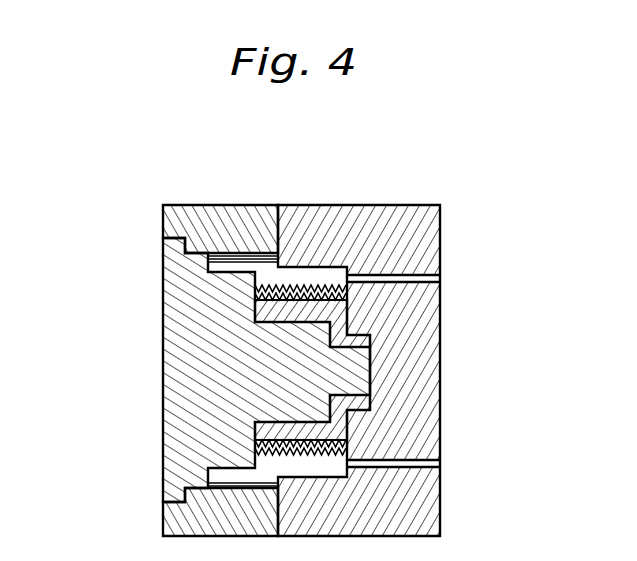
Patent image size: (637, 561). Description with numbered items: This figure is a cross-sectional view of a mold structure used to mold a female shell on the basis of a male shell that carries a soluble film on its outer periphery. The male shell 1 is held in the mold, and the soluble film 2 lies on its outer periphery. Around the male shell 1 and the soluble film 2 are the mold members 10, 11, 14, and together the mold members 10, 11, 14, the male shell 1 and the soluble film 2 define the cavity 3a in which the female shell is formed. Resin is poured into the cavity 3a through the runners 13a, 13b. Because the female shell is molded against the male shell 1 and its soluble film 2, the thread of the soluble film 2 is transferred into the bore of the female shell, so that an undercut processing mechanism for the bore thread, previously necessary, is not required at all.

The male shell 1 is at (345, 327).
The soluble film 2 is at (325, 288).
The cavity 3a is at (247, 268).
The mold member 10 is at (423, 220).
The mold member 11 is at (242, 218).
The runner 13a is at (440, 278).
The runner 13b is at (428, 462).
The mold member 14 is at (190, 403).